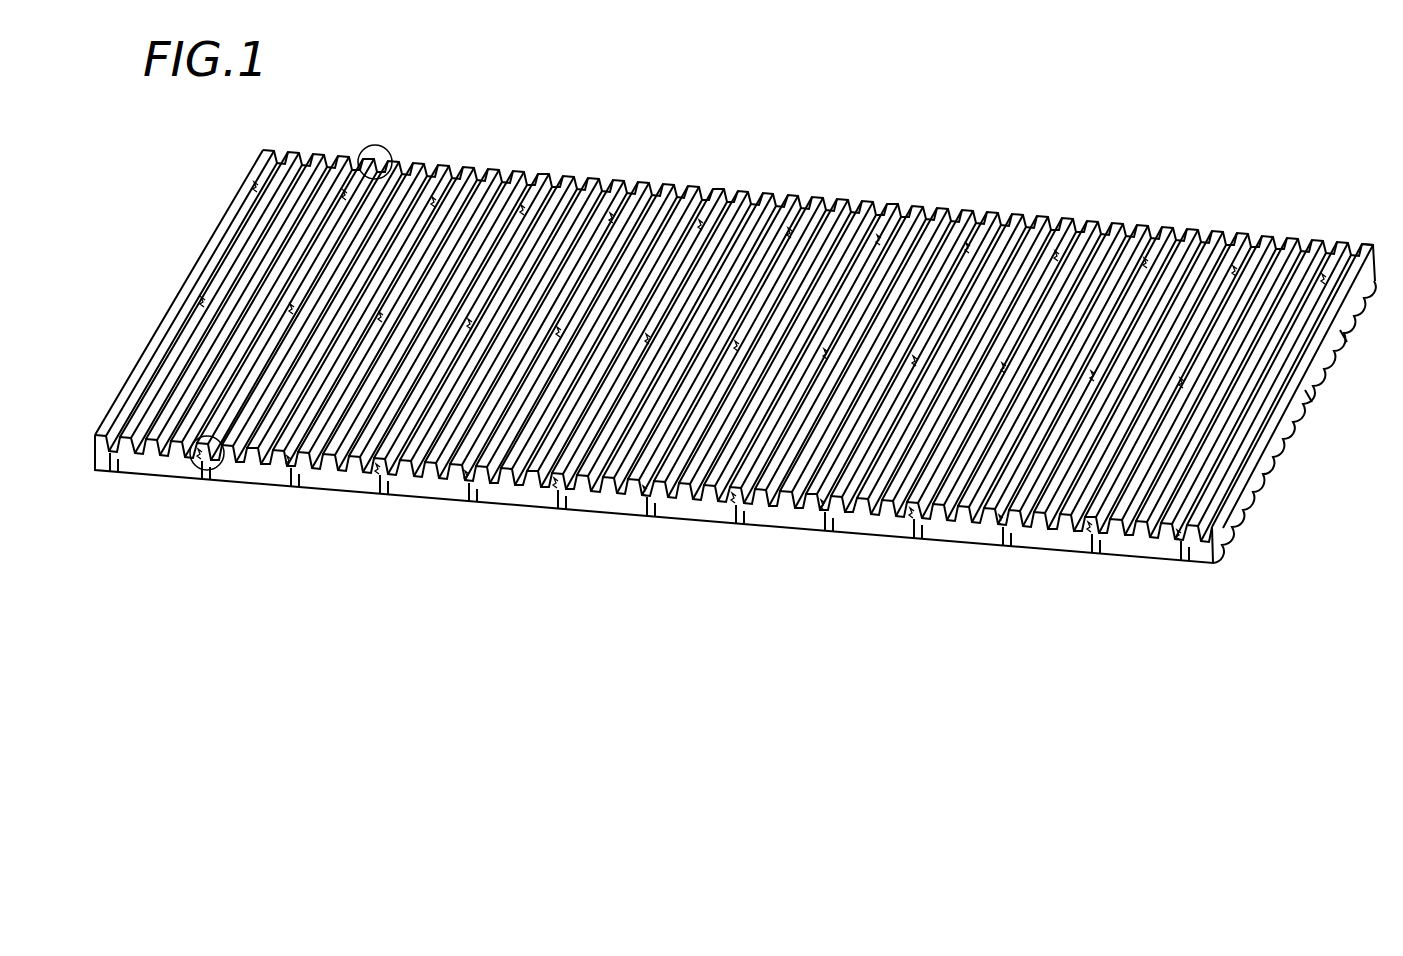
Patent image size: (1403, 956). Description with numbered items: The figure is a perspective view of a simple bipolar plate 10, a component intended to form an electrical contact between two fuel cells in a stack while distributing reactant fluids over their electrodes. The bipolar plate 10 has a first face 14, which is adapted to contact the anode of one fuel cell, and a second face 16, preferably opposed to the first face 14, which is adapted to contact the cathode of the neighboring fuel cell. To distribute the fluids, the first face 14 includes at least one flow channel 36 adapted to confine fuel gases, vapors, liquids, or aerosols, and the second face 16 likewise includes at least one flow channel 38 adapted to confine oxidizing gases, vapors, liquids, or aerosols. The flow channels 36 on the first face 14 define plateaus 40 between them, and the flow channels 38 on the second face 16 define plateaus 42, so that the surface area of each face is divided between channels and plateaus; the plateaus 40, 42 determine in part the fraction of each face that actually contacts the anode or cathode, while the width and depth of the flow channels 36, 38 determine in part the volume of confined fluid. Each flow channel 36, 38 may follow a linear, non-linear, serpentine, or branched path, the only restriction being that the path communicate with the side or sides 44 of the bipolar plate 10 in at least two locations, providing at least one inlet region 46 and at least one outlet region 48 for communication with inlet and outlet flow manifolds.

The bipolar plate 10 is at (1177, 180).
The first face 14 is at (1370, 243).
The second face 16 is at (1213, 563).
The flow channel 36 is at (750, 182).
The flow channel 38 is at (1270, 480).
The plateaus 40 is at (605, 178).
The plateaus 42 is at (1310, 394).
The sides 44 is at (1284, 438).
The inlet region 46 is at (222, 471).
The outlet region 48 is at (388, 147).